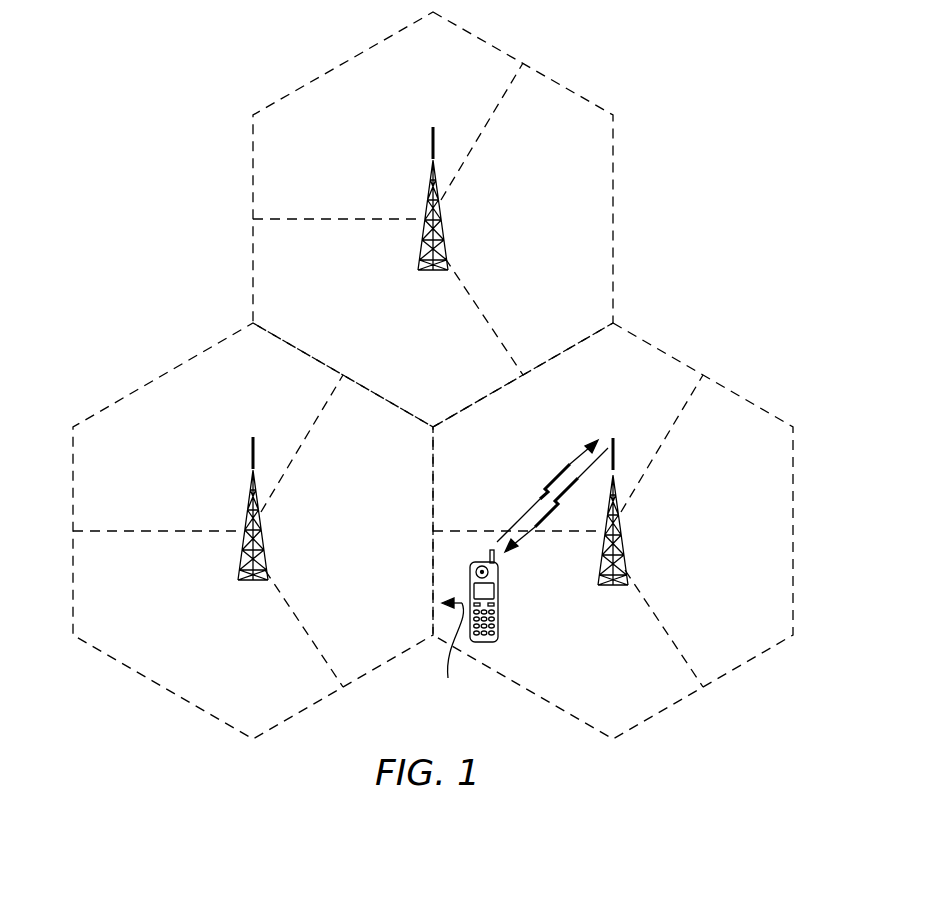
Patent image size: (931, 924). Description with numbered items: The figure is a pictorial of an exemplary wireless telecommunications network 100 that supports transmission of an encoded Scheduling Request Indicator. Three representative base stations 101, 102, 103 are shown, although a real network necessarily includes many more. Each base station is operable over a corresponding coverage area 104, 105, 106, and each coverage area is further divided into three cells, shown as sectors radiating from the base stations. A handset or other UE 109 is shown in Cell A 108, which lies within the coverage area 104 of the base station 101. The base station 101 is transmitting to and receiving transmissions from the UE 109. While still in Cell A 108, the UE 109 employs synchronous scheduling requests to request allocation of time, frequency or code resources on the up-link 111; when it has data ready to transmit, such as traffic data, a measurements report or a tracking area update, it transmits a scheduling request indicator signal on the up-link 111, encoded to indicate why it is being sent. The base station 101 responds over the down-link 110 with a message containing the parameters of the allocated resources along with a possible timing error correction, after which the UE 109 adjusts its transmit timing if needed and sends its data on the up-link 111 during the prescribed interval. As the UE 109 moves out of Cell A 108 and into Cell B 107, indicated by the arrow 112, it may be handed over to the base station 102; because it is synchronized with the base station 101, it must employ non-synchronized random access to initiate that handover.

The wireless telecommunications network 100 is at (112, 206).
The base station 101 is at (626, 546).
The base station 102 is at (246, 489).
The base station 103 is at (427, 182).
The coverage area 104 is at (735, 668).
The coverage area 105 is at (163, 688).
The coverage area 106 is at (613, 219).
The Cell B 107 is at (388, 634).
The Cell A 108 is at (620, 698).
The UE 109 is at (498, 612).
The down-link 110 is at (533, 532).
The up-link 111 is at (558, 478).
The handover direction 112 is at (449, 649).